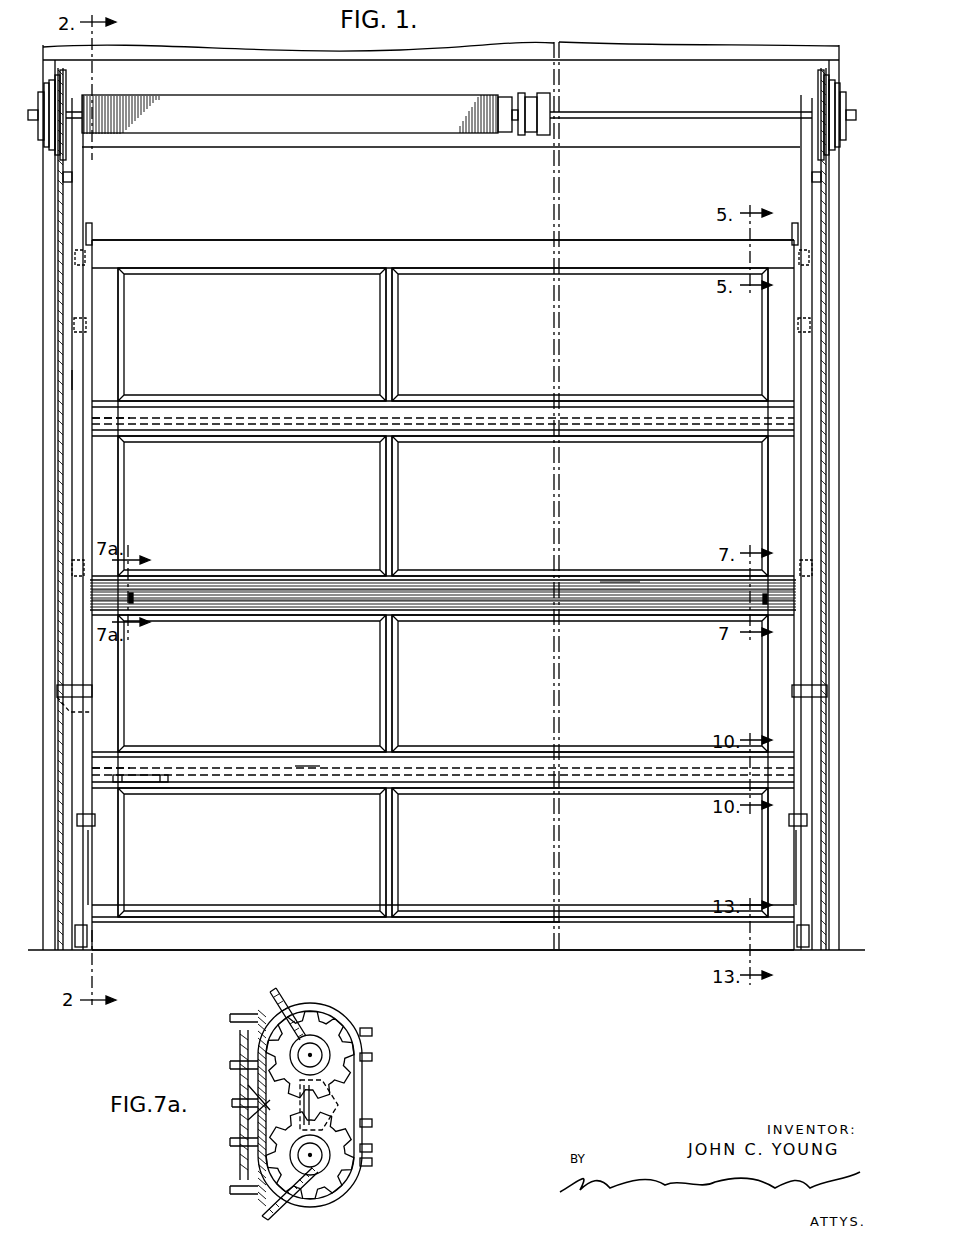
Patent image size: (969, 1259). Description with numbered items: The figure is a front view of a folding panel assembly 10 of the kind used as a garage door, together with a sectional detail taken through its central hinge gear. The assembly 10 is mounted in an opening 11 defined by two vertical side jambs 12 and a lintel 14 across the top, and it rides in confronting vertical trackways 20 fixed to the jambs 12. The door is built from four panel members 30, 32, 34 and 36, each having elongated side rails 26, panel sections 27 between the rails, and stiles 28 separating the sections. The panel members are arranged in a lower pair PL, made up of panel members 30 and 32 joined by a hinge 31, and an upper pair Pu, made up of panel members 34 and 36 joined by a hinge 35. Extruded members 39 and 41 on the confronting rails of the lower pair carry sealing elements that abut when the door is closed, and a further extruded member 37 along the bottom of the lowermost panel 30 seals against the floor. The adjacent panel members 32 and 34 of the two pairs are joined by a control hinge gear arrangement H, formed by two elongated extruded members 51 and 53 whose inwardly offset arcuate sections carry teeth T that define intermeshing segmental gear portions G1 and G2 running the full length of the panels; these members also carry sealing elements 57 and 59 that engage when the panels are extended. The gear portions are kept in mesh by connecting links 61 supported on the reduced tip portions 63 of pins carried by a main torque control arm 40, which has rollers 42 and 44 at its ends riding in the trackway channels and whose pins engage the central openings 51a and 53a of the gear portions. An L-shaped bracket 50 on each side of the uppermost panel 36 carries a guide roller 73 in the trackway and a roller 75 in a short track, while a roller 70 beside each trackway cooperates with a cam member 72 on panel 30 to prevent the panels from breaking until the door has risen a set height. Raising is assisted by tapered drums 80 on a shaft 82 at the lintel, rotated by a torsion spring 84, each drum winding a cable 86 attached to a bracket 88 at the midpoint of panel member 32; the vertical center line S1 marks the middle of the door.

In FIG. 1, the folding panel assembly 10 is at (436, 240).
In FIG. 1, the opening 11 is at (72, 378).
In FIG. 1, the side jambs 12 is at (835, 290).
In FIG. 1, the lintel 14 is at (228, 73).
In FIG. 1, the trackways 20 is at (85, 905).
In FIG. 1, the side rails 26 is at (512, 400).
In FIG. 1, the panel sections 27 is at (237, 285).
In FIG. 1, the stiles 28 is at (386, 342).
In FIG. 1, the panel member 30 is at (306, 846).
In FIG. 1, the hinge 31 is at (410, 775).
In FIG. 1, the panel member 32 is at (298, 691).
In FIG. 1, the panel member 34 is at (298, 517).
In FIG. 1, the hinge 35 is at (600, 418).
In FIG. 1, the panel member 36 is at (298, 341).
In FIG. 1, the extruded member 37 is at (517, 935).
In FIG. 1, the extruded member 39 is at (243, 773).
In FIG. 1, the main torque control arm 40 is at (90, 595).
In FIG. 1, the extruded member 41 is at (305, 768).
In FIG. 1, the roller 42 is at (74, 568).
In FIG. 1, the roller 44 is at (88, 714).
In FIG. 1, the L-shaped bracket 50 is at (92, 232).
In FIG. 1, the elongated extruded member 51 is at (425, 592).
In FIG. 7a, the elongated extruded member 51 is at (268, 1020).
In FIG. 7a, the central opening 51a is at (312, 1033).
In FIG. 1, the elongated extruded member 53 is at (445, 602).
In FIG. 7a, the elongated extruded member 53 is at (258, 1190).
In FIG. 7a, the central opening 53a is at (320, 1174).
In FIG. 7a, the sealing element 57 is at (247, 1093).
In FIG. 7a, the sealing element 59 is at (252, 1103).
In FIG. 1, the connecting links 61 is at (133, 598).
In FIG. 7a, the connecting links 61 is at (353, 1107).
In FIG. 7a, the reduced tip portion 63 is at (297, 1050).
In FIG. 1, the roller 70 is at (96, 820).
In FIG. 1, the cam member 72 is at (92, 855).
In FIG. 1, the guide roller 73 is at (815, 245).
In FIG. 1, the roller 75 is at (812, 330).
In FIG. 1, the tapered drums 80 is at (66, 95).
In FIG. 1, the shaft 82 is at (697, 118).
In FIG. 1, the torsion spring 84 is at (372, 124).
In FIG. 1, the cable 86 is at (63, 218).
In FIG. 1, the bracket 88 is at (72, 690).
In FIG. 1, the control hinge gear arrangement H is at (622, 600).
In FIG. 7a, the control hinge gear arrangement H is at (362, 1162).
In FIG. 7a, the segmental gear portion G1 is at (360, 1067).
In FIG. 7a, the segmental gear portion G2 is at (362, 1140).
In FIG. 7a, the teeth T is at (365, 1057).
In FIG. 1, the upper pair Pu is at (128, 460).
In FIG. 1, the lower pair PL is at (108, 795).
In FIG. 1, the center line S1 is at (585, 950).